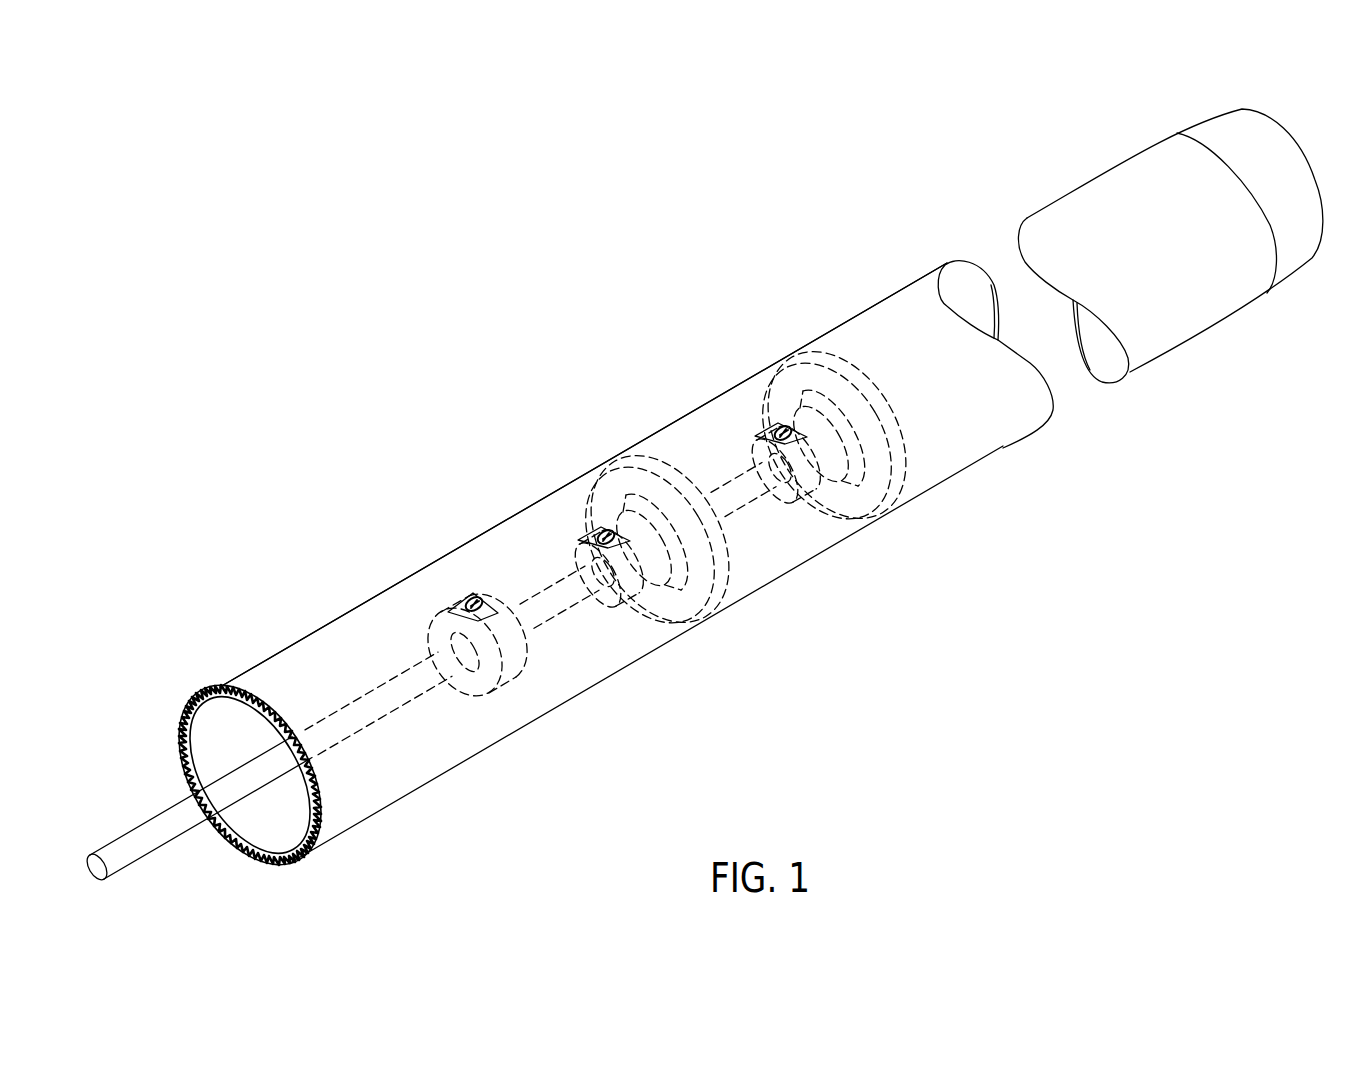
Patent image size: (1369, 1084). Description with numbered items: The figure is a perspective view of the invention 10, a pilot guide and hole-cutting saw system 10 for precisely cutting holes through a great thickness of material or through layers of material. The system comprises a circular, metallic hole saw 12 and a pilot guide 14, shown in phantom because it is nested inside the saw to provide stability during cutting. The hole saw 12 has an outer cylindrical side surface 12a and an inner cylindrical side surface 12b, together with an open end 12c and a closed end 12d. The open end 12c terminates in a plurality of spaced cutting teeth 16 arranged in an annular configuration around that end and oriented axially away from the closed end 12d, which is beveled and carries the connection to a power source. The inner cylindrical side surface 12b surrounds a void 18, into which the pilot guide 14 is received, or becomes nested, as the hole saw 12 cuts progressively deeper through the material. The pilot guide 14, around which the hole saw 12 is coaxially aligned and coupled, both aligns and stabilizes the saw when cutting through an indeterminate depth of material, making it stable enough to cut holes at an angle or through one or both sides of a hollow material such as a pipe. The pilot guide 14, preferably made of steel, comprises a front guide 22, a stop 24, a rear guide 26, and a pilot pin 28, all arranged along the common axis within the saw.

The pilot guide and hole-cutting saw system 10 is at (396, 278).
The hole saw 12 is at (345, 612).
The outer cylindrical side surface 12a is at (1003, 448).
The inner cylindrical side surface 12b is at (962, 262).
The open end 12c is at (205, 716).
The closed end 12d is at (1303, 150).
The pilot guide 14 is at (628, 628).
The cutting teeth 16 is at (183, 745).
The void 18 is at (270, 845).
The front guide 22 is at (628, 462).
The stop 24 is at (458, 600).
The rear guide 26 is at (808, 360).
The pilot pin 28 is at (125, 834).